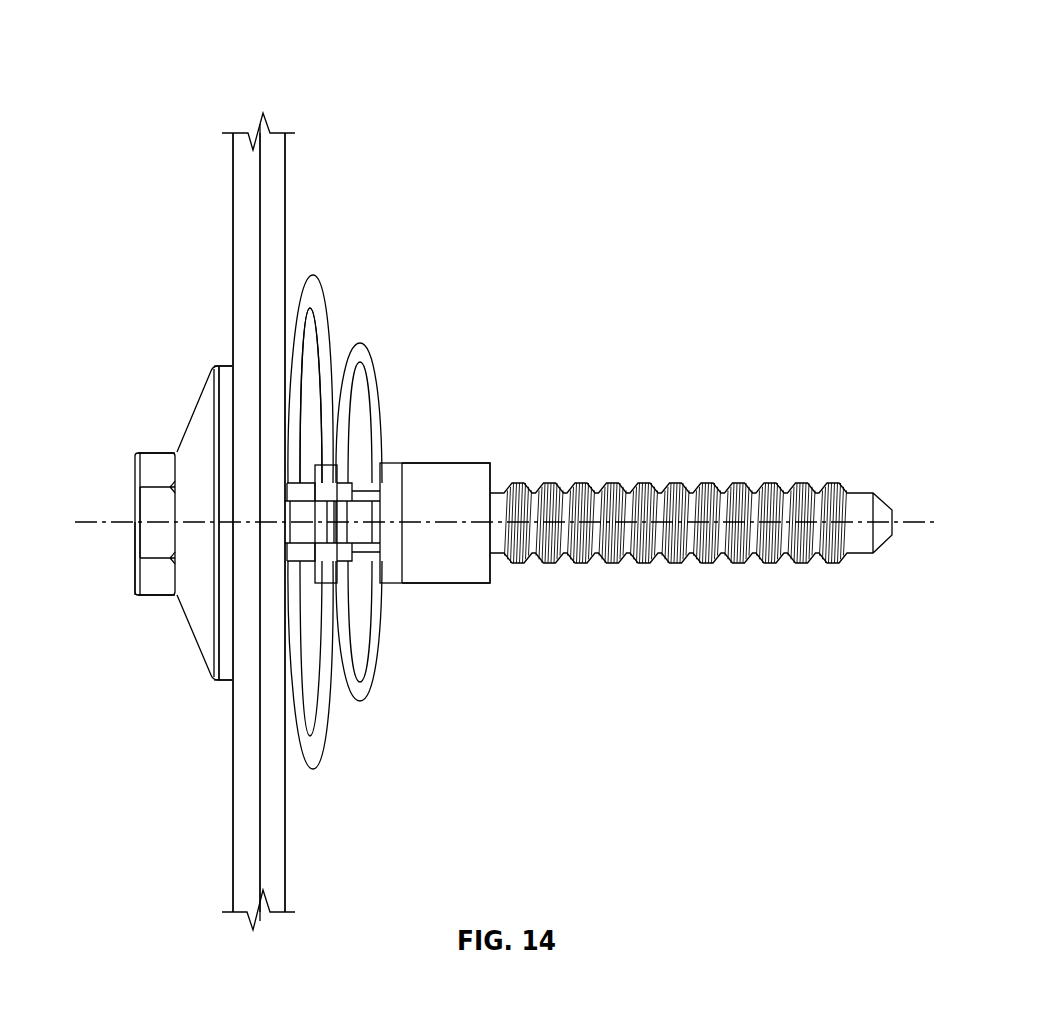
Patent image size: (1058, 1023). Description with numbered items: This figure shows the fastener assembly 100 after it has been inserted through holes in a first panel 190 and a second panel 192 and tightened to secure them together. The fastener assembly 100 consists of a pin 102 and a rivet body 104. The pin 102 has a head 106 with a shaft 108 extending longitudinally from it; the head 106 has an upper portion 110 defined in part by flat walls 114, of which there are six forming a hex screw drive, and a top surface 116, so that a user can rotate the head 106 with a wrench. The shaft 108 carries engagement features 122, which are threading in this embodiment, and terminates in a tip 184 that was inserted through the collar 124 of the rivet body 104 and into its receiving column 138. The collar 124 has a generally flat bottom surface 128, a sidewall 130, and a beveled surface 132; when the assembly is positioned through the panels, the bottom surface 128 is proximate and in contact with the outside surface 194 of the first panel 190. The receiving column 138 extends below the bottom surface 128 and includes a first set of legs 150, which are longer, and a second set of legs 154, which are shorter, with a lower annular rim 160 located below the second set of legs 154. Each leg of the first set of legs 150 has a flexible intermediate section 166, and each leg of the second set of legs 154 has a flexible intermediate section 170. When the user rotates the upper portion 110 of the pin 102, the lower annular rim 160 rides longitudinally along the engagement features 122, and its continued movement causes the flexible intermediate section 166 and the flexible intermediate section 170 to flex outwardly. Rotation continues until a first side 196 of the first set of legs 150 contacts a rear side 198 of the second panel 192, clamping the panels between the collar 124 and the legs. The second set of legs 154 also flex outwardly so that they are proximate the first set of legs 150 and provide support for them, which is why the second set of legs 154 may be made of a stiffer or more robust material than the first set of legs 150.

The fastener assembly 100 is at (146, 56).
The pin 102 is at (152, 465).
The rivet body 104 is at (412, 488).
The head 106 is at (145, 583).
The shaft 108 is at (565, 490).
The upper portion 110 is at (140, 457).
The flat walls 114 is at (145, 543).
The top surface 116 is at (135, 580).
The engagement features 122 is at (748, 495).
The collar 124 is at (228, 682).
The bottom surface 128 is at (232, 402).
The sidewall 130 is at (224, 367).
The beveled surface 132 is at (213, 368).
The receiving column 138 is at (388, 578).
The first set of legs 150 is at (333, 340).
The second set of legs 154 is at (378, 407).
The lower annular rim 160 is at (467, 572).
The flexible intermediate section 166 is at (315, 772).
The flexible intermediate section 170 is at (360, 703).
The tip 184 is at (884, 518).
The first panel 190 is at (246, 170).
The second panel 192 is at (268, 157).
The outside surface 194 is at (230, 205).
The first side 196 is at (295, 335).
The rear side 198 is at (285, 218).